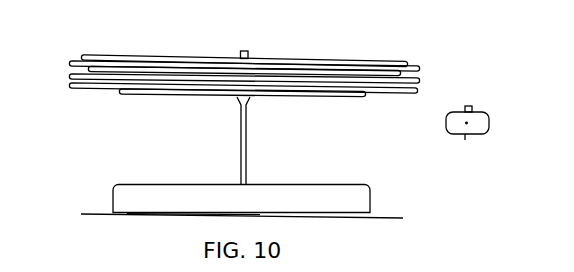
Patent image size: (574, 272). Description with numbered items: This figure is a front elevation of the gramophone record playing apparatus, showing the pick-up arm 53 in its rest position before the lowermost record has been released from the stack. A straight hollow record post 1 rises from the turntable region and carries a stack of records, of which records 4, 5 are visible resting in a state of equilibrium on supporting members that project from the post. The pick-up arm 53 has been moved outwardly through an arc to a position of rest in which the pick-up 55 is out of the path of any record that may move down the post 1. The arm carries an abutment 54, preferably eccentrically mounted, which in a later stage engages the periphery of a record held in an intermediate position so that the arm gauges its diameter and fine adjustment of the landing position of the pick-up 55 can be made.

The record post 1 is at (247, 145).
The record 4 is at (364, 95).
The record 5 is at (418, 91).
The pick-up arm 53 is at (490, 123).
The abutment 54 is at (472, 108).
The pick-up 55 is at (463, 137).